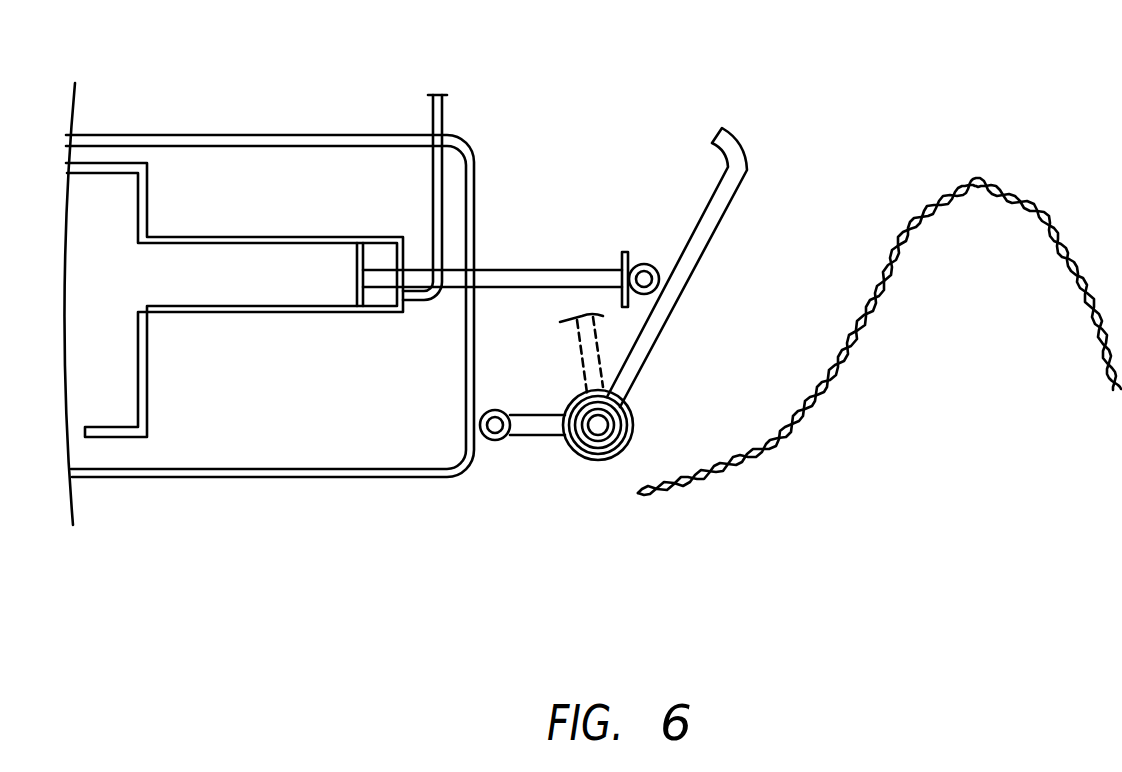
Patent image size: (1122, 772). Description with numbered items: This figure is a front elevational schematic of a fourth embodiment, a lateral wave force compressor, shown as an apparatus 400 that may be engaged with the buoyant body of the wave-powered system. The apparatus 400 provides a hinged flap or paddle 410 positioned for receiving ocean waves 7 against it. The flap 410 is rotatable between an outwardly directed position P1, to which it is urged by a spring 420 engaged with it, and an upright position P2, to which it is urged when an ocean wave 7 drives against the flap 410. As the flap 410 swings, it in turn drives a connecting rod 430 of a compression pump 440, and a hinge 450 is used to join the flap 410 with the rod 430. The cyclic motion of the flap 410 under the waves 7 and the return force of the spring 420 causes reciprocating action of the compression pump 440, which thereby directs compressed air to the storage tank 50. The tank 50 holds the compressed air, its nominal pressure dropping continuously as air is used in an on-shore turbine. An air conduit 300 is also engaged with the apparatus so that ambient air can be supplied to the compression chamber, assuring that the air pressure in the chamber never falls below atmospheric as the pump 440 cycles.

The ocean waves 7 is at (823, 415).
The storage tank 50 is at (147, 373).
The air conduit 300 is at (433, 90).
The apparatus 400 is at (335, 480).
The hinged flap 410 is at (732, 130).
The spring 420 is at (570, 463).
The connecting rod 430 is at (522, 266).
The compression pump 440 is at (288, 237).
The hinge 450 is at (662, 259).
The outwardly directed position P1 is at (746, 170).
The upright position P2 is at (577, 367).